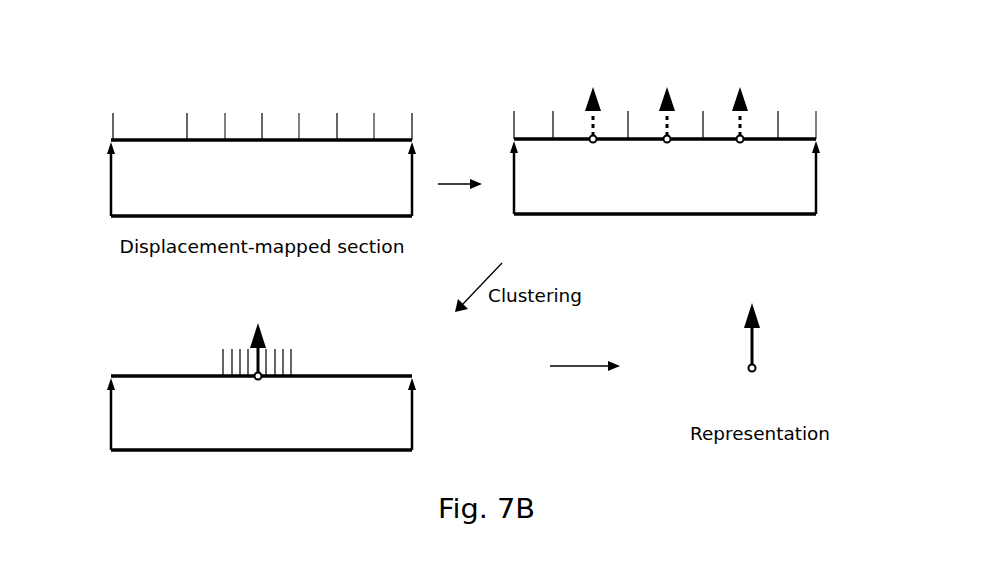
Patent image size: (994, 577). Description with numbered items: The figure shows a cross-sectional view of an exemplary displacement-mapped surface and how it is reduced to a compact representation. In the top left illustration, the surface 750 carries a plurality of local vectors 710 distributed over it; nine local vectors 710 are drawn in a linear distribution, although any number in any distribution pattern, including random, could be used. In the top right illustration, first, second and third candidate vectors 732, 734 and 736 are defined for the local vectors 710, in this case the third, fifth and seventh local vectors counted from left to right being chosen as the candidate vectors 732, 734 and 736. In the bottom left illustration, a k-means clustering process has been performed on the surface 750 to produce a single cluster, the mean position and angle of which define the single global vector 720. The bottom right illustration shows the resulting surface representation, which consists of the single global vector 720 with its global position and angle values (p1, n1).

The local vectors 710 is at (112, 112).
The surface 750 is at (417, 135).
The single global vector 720 is at (502, 341).
The first candidate vector 732 is at (598, 116).
The second candidate vector 734 is at (672, 116).
The third candidate vector 736 is at (745, 116).